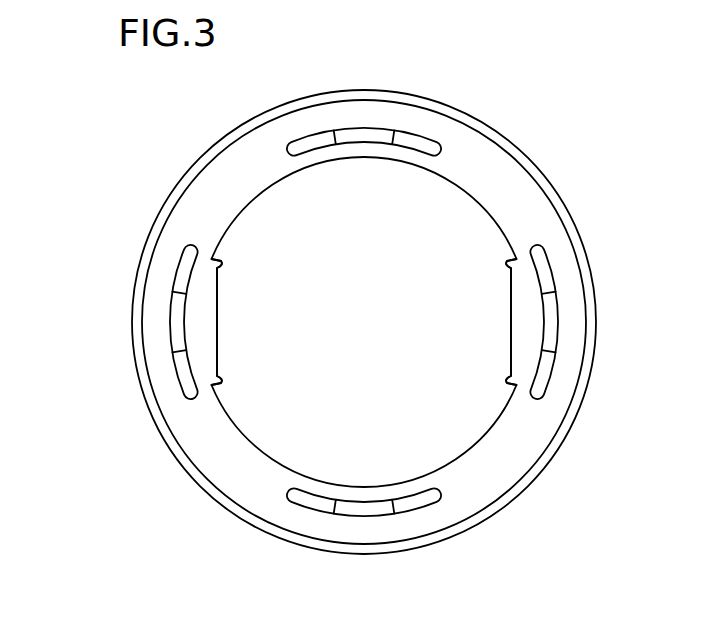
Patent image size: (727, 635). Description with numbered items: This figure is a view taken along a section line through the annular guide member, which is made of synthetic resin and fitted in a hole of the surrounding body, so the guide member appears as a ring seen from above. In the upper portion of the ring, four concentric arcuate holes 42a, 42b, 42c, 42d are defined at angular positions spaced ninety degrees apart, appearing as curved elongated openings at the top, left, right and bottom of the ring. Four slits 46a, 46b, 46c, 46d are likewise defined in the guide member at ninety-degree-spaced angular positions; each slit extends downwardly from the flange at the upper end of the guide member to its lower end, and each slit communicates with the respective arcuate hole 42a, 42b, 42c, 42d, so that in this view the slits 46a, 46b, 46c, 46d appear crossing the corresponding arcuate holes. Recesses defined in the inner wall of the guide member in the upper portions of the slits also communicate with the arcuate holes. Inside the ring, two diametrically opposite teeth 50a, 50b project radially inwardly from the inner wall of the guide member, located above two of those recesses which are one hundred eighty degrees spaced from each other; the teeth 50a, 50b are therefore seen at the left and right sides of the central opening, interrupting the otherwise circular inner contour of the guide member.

The arcuate hole 42a is at (178, 268).
The arcuate hole 42b is at (412, 137).
The arcuate hole 42c is at (546, 378).
The arcuate hole 42d is at (303, 507).
The slit 46a is at (168, 328).
The slit 46b is at (340, 138).
The slit 46c is at (551, 300).
The slit 46d is at (383, 508).
The tooth 50a is at (208, 323).
The tooth 50b is at (520, 327).